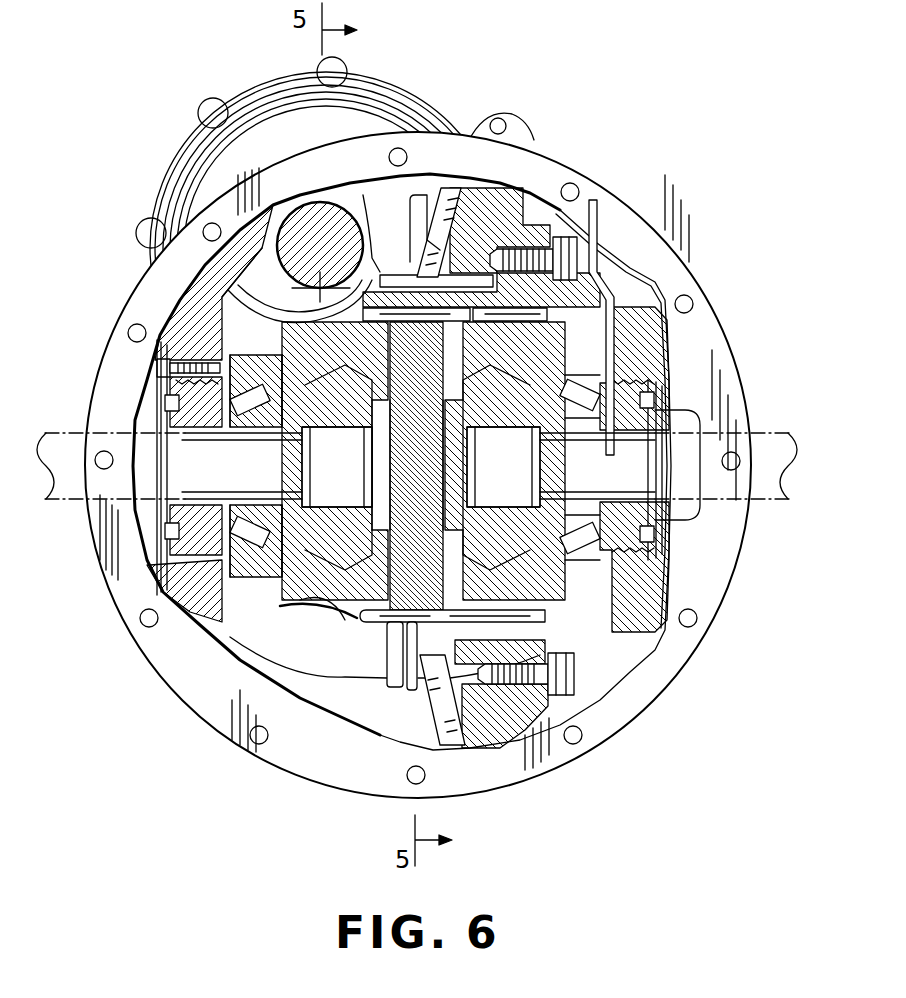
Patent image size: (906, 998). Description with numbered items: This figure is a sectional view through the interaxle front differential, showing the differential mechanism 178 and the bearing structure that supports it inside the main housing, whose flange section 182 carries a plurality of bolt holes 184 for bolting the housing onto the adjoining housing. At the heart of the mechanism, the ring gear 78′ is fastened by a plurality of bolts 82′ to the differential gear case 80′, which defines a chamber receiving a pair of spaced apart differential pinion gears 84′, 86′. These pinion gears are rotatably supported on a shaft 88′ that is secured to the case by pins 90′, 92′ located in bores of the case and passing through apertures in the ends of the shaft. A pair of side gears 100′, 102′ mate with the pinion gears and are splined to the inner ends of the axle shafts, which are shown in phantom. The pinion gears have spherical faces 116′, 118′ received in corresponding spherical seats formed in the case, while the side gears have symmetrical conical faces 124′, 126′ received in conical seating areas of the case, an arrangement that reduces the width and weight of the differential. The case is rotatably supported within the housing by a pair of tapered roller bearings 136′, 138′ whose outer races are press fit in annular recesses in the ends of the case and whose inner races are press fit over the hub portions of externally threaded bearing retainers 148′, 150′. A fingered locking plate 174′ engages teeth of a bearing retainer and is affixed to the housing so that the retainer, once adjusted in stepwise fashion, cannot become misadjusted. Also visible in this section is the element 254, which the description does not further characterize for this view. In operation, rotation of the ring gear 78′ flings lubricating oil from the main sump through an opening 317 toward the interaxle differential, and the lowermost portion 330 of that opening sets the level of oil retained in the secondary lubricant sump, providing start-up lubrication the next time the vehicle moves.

The ring gear 78′ is at (512, 197).
The differential gear case 80′ is at (312, 598).
The bolts 82′ is at (578, 262).
The differential pinion gear 84′ is at (380, 532).
The differential pinion gear 86′ is at (450, 405).
The shaft 88′ is at (437, 468).
The pin 90′ is at (424, 660).
The pin 92′ is at (425, 290).
The side gear 100′ is at (513, 517).
The side gear 102′ is at (327, 528).
The spherical face 116′ is at (362, 596).
The spherical face 118′ is at (383, 338).
The conical face 124′ is at (557, 418).
The conical face 126′ is at (297, 412).
The tapered roller bearing 136′ is at (597, 320).
The tapered roller bearing 138′ is at (262, 452).
The bearing retainer 148′ is at (658, 413).
The bearing retainer 150′ is at (187, 413).
The fingered locking plate 174′ is at (152, 371).
The differential mechanism 178 is at (256, 603).
The flange section 182 is at (723, 581).
The bolt holes 184 is at (690, 630).
The lubricant port 254 is at (312, 226).
The opening 317 is at (425, 210).
The lowermost portion 330 is at (378, 192).